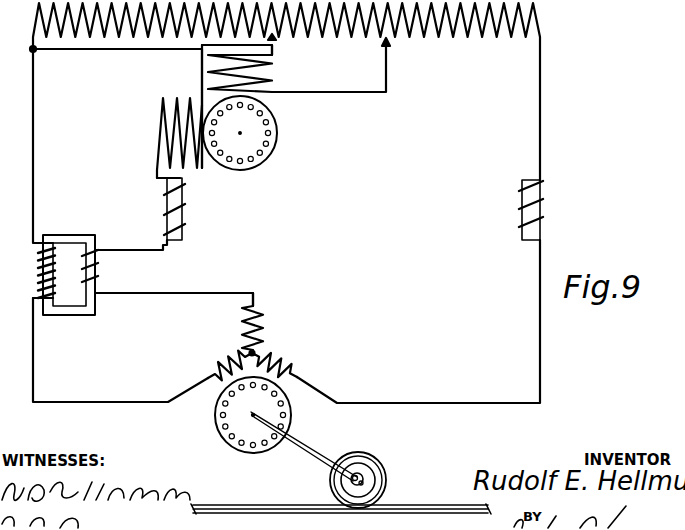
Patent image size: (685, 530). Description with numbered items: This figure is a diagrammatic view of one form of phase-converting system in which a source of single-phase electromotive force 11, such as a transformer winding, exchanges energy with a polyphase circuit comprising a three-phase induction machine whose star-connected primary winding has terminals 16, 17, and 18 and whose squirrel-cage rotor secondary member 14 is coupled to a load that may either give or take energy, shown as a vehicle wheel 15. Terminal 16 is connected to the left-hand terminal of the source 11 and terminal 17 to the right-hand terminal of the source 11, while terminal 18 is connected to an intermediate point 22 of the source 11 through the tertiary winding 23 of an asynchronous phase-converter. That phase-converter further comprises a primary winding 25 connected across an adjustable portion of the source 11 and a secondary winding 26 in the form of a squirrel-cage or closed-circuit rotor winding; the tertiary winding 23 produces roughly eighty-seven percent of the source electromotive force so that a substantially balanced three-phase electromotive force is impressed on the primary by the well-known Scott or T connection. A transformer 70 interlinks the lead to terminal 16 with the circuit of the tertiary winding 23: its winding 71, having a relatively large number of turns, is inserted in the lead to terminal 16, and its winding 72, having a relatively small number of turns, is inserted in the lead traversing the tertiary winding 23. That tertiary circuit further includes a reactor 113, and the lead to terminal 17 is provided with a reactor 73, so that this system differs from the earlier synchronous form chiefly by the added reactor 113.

The source of single-phase electromotive force 11 is at (537, 22).
The intermediate point 22 is at (202, 72).
The primary winding 25 is at (273, 78).
The tertiary winding 23 is at (163, 135).
The secondary winding 26 is at (268, 140).
The reactor 113 is at (183, 207).
The reactance device 73 is at (541, 213).
The transformer 70 is at (77, 290).
The winding 71 is at (38, 275).
The winding 72 is at (99, 272).
The terminal 18 is at (255, 301).
The terminal 16 is at (208, 380).
The terminal 17 is at (300, 380).
The squirrel-cage rotor secondary member 14 is at (232, 437).
The vehicle wheel 15 is at (372, 469).